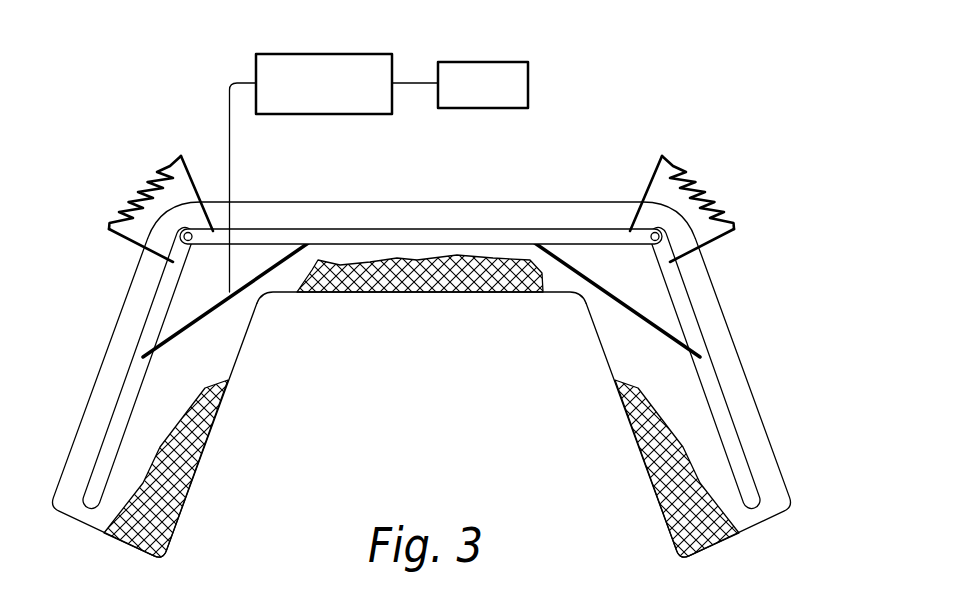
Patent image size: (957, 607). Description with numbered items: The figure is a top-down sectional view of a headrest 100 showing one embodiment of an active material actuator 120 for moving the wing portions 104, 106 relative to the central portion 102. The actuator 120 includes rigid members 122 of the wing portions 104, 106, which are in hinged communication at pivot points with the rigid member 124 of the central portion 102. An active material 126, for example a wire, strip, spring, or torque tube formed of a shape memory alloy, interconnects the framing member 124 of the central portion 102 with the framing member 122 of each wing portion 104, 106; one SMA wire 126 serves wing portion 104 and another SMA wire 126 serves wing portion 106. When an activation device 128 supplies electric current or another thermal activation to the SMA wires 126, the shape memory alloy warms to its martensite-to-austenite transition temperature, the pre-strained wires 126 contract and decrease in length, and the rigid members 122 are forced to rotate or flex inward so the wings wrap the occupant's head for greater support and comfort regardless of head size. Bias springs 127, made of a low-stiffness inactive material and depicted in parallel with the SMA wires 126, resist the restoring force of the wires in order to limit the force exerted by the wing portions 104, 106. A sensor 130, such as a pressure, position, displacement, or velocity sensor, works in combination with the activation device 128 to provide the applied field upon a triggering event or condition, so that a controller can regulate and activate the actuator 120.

The headrest 100 is at (713, 107).
The central portion 102 is at (367, 201).
The wing portion 104 is at (732, 332).
The wing portion 106 is at (113, 332).
The active material actuator 120 is at (572, 228).
The rigid member of wing portion 122 is at (118, 428).
The rigid member of central portion 124 is at (473, 243).
The active material 126 is at (187, 334).
The bias spring 127 is at (137, 197).
The activation device 128 is at (308, 53).
The sensor 130 is at (483, 61).